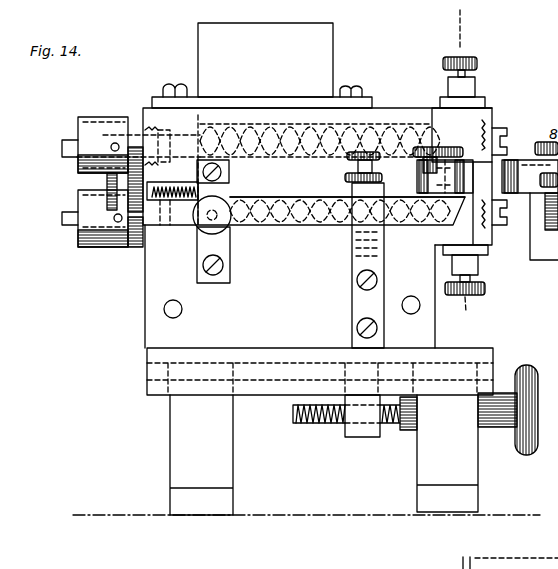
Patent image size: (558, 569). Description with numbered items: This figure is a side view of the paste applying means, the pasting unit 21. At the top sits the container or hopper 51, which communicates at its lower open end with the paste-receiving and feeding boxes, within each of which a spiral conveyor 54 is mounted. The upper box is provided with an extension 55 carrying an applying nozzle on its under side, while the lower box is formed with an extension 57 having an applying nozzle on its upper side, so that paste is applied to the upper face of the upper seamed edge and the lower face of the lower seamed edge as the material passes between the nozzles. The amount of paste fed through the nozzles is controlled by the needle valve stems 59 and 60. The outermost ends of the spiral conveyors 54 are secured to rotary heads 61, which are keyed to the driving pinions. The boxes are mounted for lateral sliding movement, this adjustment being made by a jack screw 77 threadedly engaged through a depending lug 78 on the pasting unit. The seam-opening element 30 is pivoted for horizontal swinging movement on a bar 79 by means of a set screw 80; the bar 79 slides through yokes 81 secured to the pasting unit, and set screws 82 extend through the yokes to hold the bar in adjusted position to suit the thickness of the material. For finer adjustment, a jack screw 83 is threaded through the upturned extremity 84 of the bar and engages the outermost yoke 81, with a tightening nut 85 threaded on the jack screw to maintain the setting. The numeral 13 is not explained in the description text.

The container or hopper 51 is at (323, 48).
The center line 13 is at (454, 170).
The needle valve stem 59 is at (467, 73).
The extension 55 is at (483, 118).
The pasting unit 21 is at (389, 115).
The set screw 80 is at (421, 147).
The seam-opening element 30 is at (525, 142).
The rotary head 61 is at (82, 200).
The upturned extremity 84 is at (152, 183).
The set screw 82 is at (218, 212).
The spiral conveyor 54 is at (320, 153).
The jack screw 83 is at (187, 200).
The yoke 81 is at (230, 240).
The tightening nut 85 is at (130, 217).
The bar 79 is at (290, 226).
The extension 57 is at (483, 237).
The needle valve stem 60 is at (478, 280).
The depending lug 78 is at (362, 432).
The jack screw 77 is at (397, 423).